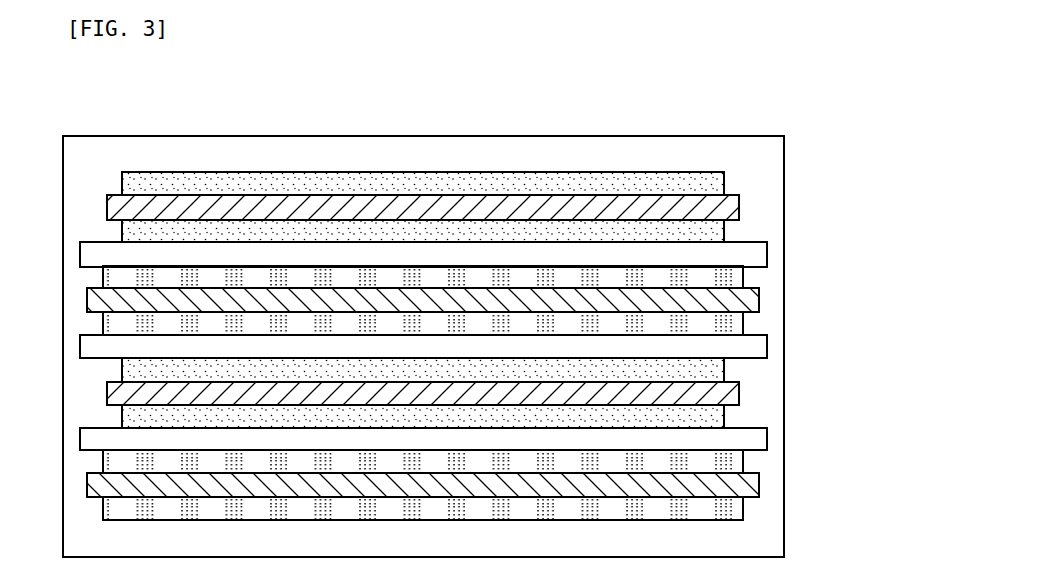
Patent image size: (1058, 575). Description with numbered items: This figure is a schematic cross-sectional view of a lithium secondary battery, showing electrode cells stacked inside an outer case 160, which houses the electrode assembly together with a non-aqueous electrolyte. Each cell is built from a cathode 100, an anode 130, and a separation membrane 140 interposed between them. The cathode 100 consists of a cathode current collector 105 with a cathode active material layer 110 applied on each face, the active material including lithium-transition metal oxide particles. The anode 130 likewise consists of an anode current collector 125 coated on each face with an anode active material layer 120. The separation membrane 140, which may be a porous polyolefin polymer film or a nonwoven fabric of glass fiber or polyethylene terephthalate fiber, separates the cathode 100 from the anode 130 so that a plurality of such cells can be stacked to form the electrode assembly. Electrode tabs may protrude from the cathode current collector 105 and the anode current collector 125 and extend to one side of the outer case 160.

The cathode 100 is at (524, 300).
The cathode current collector 105 is at (713, 206).
The cathode active material layer 110 is at (717, 186).
The anode active material layer 120 is at (730, 280).
The anode current collector 125 is at (730, 303).
The anode 130 is at (514, 393).
The separation membrane 140 is at (455, 257).
The outer case 160 is at (713, 135).